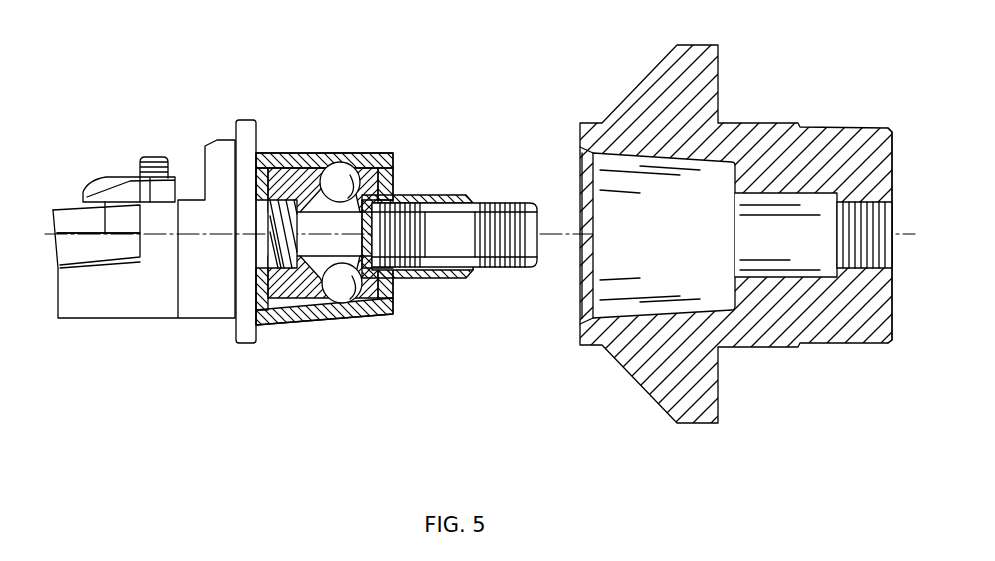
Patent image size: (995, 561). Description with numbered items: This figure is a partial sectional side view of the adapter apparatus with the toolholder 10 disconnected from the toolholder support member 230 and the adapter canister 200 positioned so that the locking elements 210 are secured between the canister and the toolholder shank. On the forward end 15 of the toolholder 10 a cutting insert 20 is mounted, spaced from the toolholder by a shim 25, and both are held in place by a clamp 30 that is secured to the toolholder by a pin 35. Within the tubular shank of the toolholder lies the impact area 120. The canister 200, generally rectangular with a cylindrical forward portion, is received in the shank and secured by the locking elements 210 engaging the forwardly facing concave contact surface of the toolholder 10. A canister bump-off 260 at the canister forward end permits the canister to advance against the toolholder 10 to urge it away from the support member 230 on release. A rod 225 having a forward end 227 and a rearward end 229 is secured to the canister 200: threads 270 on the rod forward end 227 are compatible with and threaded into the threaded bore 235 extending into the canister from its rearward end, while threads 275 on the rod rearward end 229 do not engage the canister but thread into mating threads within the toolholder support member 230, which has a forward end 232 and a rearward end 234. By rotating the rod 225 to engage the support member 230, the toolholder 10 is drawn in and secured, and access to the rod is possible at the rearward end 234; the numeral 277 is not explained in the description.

The toolholder 10 is at (172, 152).
The forward end 15 is at (123, 308).
The cutting insert 20 is at (68, 217).
The shim 25 is at (87, 250).
The clamp 30 is at (108, 197).
The pin 35 is at (150, 155).
The impact area 120 is at (273, 153).
The adapter canister 200 is at (454, 177).
The locking elements 210 is at (338, 168).
The rod 225 is at (473, 193).
The rod forward end 227 is at (303, 177).
The rod rearward end 229 is at (540, 197).
The toolholder support member 230 is at (730, 234).
The forward end 232 is at (575, 150).
The rearward end 234 is at (895, 140).
The threaded bore 235 is at (410, 277).
The canister bump-off 260 is at (237, 265).
The threads 270 is at (408, 197).
The threads 275 is at (520, 197).
The threaded bore 277 is at (855, 250).